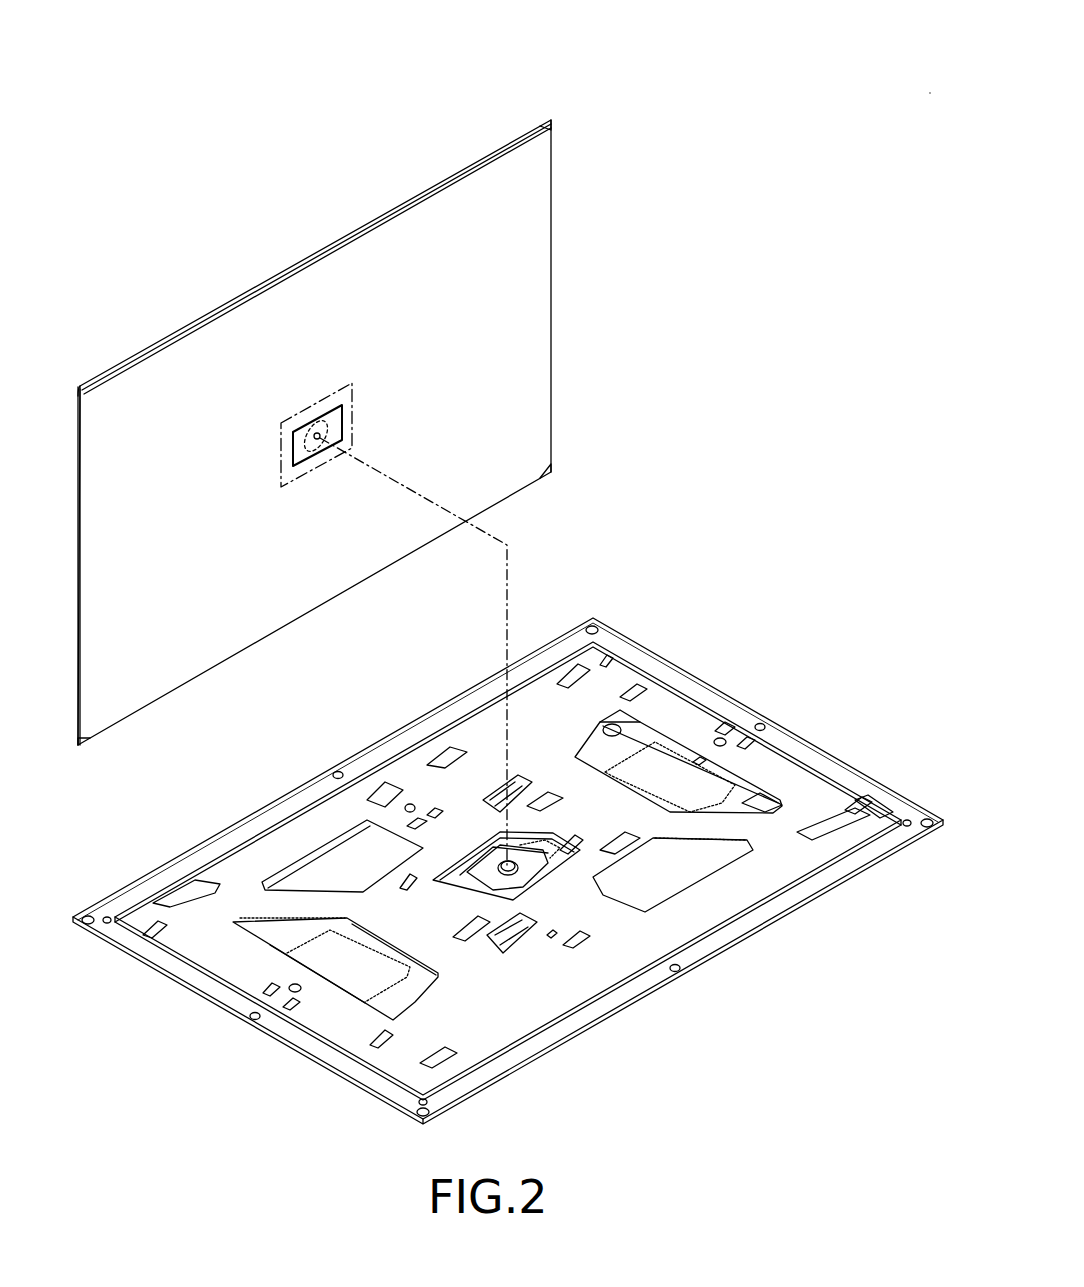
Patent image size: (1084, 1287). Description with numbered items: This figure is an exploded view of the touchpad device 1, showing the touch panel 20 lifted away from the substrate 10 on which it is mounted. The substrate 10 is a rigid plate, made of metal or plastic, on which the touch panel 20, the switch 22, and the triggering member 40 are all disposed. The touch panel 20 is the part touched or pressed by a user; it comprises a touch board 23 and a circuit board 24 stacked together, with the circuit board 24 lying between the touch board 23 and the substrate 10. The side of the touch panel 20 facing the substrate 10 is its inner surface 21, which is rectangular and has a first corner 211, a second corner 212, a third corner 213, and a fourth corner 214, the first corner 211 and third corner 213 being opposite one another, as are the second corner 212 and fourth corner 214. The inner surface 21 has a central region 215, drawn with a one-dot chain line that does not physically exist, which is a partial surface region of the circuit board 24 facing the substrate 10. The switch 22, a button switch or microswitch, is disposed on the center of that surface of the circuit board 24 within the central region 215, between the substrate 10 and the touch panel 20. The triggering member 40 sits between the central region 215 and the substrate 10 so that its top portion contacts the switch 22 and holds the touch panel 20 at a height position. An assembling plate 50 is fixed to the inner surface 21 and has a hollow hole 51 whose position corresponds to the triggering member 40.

The touchpad device 1 is at (930, 93).
The substrate 10 is at (933, 806).
The touch panel 20 is at (440, 136).
The inner surface 21 is at (543, 195).
The first corner 211 is at (78, 750).
The second corner 212 is at (556, 474).
The third corner 213 is at (553, 121).
The fourth corner 214 is at (78, 387).
The central region 215 is at (270, 426).
The switch 22 is at (317, 433).
The touch board 23 is at (373, 213).
The circuit board 24 is at (432, 188).
The triggering member 40 is at (513, 879).
The assembling plate 50 is at (690, 938).
The hollow hole 51 is at (578, 859).